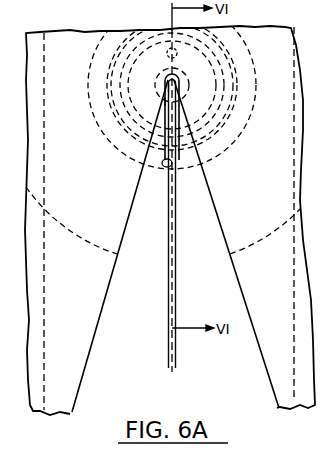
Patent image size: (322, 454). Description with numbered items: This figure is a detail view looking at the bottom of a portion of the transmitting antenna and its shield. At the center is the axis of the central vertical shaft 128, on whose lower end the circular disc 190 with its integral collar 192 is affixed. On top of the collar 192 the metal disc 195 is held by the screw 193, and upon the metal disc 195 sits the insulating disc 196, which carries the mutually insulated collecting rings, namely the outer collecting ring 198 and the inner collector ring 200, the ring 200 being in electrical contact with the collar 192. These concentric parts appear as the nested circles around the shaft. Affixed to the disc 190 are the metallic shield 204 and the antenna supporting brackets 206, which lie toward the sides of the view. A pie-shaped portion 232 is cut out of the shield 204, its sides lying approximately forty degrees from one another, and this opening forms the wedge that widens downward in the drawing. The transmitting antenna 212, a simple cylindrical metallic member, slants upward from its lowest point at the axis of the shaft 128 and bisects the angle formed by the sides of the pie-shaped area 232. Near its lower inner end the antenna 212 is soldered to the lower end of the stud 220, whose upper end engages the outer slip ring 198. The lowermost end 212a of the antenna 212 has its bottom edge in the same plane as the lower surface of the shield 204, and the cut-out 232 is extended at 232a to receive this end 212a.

The screw 193 is at (158, 27).
The collar 192 is at (238, 49).
The central vertical shaft 128 is at (167, 56).
The lowermost end of antenna 212a is at (170, 89).
The extension of cut-out portion 232a is at (162, 102).
The insulating disc 196 is at (234, 146).
The inner collector ring 200 is at (107, 140).
The metal disc 195 is at (150, 148).
The stud 220 is at (163, 168).
The outer collecting ring 198 is at (195, 166).
The circular disc 190 is at (125, 233).
The antenna supporting brackets 206 is at (33, 282).
The metallic shield 204 is at (91, 325).
The pie-shaped portion 232 is at (230, 287).
The transmitting antenna 212 is at (169, 350).